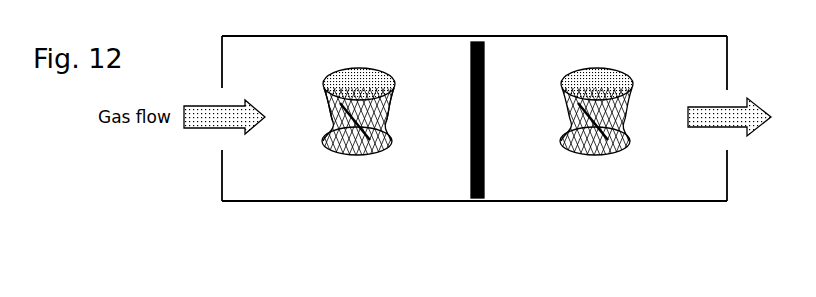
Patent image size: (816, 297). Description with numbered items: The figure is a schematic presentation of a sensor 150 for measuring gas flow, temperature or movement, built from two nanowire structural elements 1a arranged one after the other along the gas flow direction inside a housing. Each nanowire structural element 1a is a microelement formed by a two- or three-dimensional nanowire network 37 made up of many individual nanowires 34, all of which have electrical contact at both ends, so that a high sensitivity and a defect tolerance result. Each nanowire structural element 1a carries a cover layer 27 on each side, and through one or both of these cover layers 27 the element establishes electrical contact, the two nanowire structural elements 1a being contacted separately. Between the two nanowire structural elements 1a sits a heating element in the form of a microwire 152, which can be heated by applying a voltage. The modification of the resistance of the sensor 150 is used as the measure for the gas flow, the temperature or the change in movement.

The nanowire structural element 1a is at (370, 157).
The cover layer 27 is at (380, 71).
The nanowires 34 is at (384, 112).
The nanowire network 37 is at (311, 124).
The sensor 150 is at (566, 203).
The microwire 152 is at (479, 184).